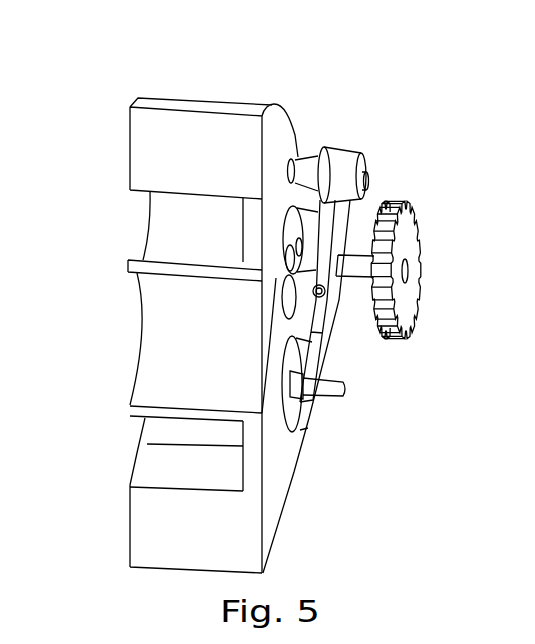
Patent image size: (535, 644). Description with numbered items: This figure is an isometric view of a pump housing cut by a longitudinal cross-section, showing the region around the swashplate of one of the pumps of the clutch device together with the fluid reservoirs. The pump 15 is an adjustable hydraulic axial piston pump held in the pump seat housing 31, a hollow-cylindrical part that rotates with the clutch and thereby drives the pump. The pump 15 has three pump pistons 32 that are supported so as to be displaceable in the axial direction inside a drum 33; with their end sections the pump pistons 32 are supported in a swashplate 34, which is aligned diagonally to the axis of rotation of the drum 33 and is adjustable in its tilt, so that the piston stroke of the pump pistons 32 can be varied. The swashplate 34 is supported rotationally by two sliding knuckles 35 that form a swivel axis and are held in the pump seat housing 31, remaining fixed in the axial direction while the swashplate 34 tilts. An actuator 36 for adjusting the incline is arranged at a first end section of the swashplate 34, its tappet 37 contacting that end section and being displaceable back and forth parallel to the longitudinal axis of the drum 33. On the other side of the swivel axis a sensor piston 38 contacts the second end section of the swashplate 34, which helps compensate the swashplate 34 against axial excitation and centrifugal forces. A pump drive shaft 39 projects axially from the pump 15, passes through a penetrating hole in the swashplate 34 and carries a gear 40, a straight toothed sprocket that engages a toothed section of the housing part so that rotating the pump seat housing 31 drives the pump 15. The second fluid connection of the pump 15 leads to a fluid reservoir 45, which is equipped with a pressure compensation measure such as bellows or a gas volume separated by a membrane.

The pump 15 is at (280, 300).
The pump seat housing 31 is at (157, 157).
The pump pistons 32 is at (309, 281).
The drum 33 is at (291, 214).
The swashplate 34 is at (324, 352).
The sliding knuckles 35 is at (350, 262).
The actuator 36 is at (293, 418).
The tappet 37 is at (297, 380).
The sensor piston 38 is at (293, 160).
The pump drive shaft 39 is at (362, 268).
The gear 40 is at (402, 295).
The fluid reservoir 45 is at (140, 232).